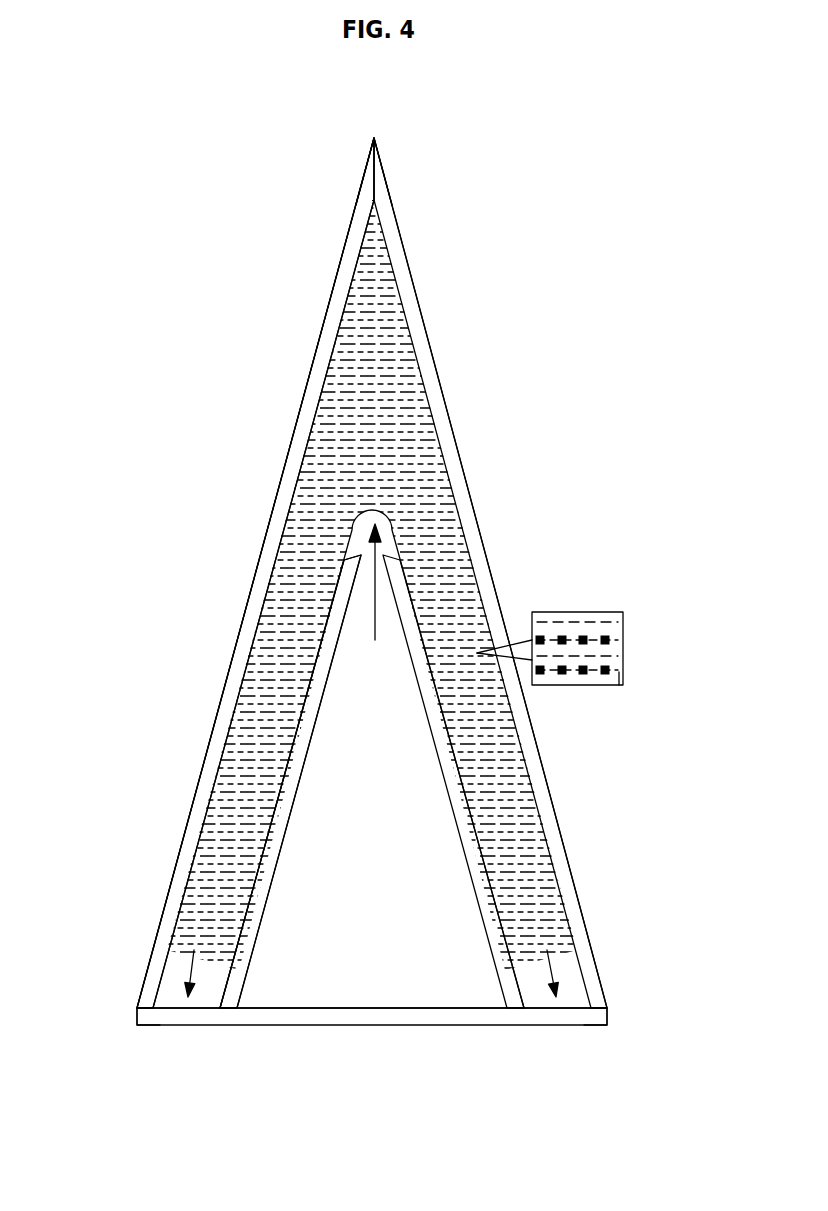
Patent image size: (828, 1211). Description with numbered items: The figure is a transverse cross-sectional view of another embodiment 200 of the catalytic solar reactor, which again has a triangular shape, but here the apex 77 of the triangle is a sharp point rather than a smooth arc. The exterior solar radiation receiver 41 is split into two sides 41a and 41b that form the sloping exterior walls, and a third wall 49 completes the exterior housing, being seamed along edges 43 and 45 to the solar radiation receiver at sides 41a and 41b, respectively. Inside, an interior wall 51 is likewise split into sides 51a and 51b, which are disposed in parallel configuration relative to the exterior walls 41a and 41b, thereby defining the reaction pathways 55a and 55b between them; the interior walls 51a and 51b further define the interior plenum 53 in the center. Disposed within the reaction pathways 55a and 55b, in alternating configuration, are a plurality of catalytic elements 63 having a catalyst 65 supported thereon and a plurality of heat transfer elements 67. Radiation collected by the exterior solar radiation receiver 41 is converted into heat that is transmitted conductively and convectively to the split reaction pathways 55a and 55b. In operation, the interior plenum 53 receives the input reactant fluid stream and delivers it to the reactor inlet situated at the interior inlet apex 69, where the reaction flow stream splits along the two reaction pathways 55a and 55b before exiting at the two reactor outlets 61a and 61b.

The catalytic solar reactor embodiment 200 is at (548, 158).
The exterior solar radiation receiver 41 is at (249, 653).
The first side of the exterior solar radiation receiver 41a is at (258, 569).
The second side of the exterior solar radiation receiver 41b is at (428, 332).
The edge 43 is at (137, 1023).
The edge 45 is at (608, 1018).
The third wall 49 is at (394, 1017).
The interior wall 51 is at (268, 874).
The first side of the interior wall 51a is at (317, 727).
The second side of the interior wall 51b is at (446, 801).
The interior plenum 53 is at (332, 968).
The reaction pathway 55a is at (245, 792).
The reaction pathway 55b is at (530, 878).
The reactor outlet 61a is at (170, 975).
The reactor outlet 61b is at (560, 970).
The catalytic element 63 is at (620, 687).
The catalyst 65 is at (562, 676).
The heat transfer element 67 is at (556, 620).
The interior inlet apex 69 is at (385, 525).
The apex 77 is at (377, 141).